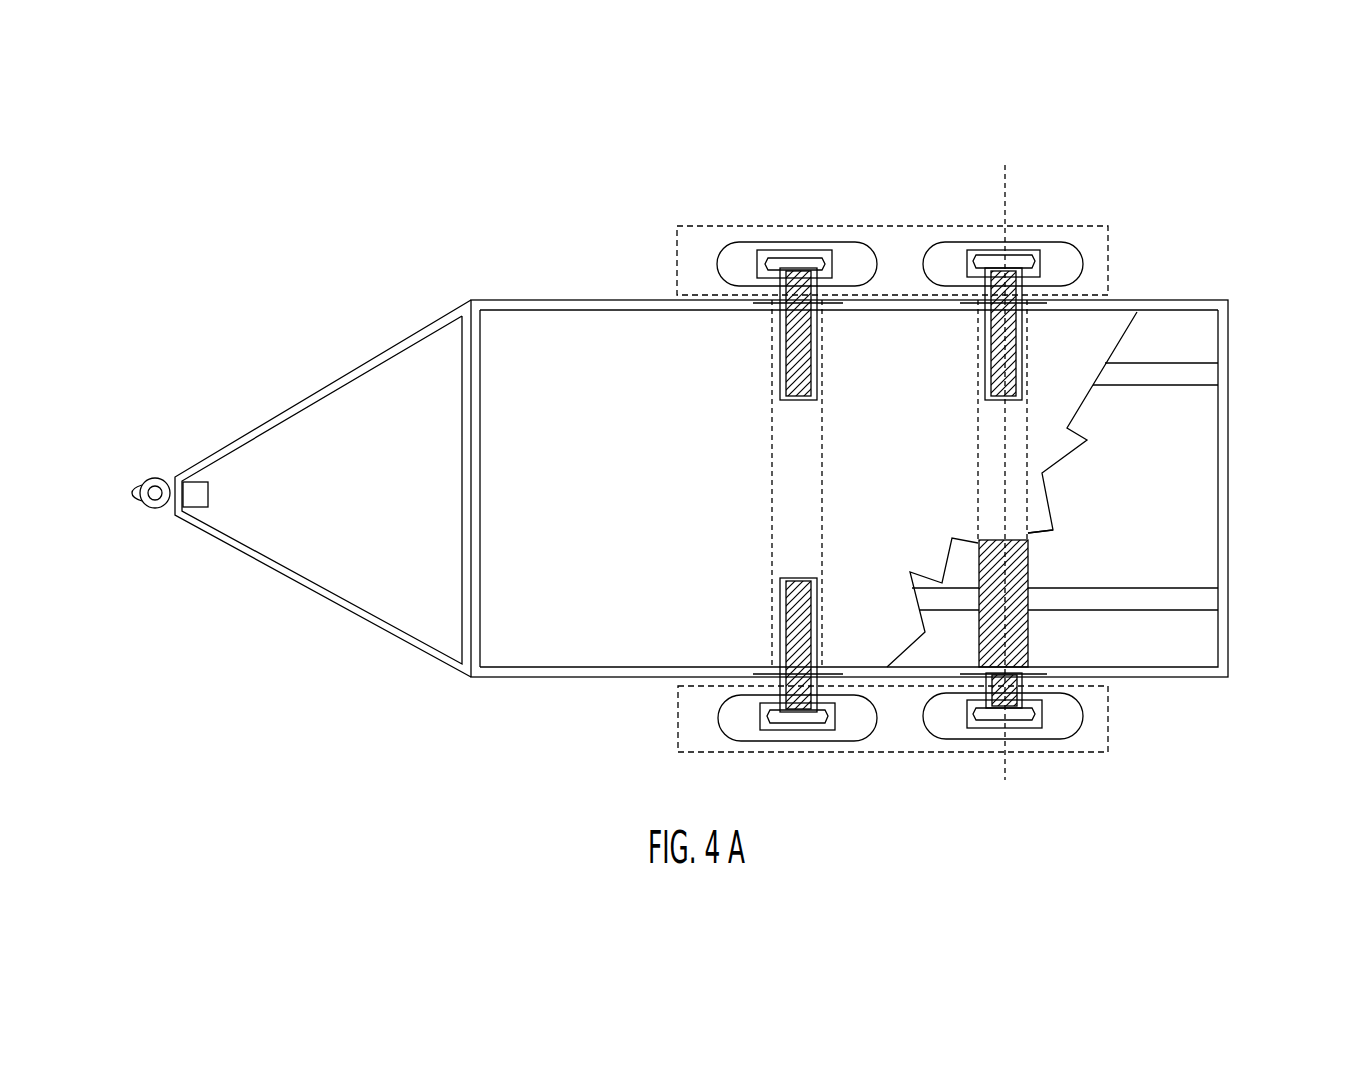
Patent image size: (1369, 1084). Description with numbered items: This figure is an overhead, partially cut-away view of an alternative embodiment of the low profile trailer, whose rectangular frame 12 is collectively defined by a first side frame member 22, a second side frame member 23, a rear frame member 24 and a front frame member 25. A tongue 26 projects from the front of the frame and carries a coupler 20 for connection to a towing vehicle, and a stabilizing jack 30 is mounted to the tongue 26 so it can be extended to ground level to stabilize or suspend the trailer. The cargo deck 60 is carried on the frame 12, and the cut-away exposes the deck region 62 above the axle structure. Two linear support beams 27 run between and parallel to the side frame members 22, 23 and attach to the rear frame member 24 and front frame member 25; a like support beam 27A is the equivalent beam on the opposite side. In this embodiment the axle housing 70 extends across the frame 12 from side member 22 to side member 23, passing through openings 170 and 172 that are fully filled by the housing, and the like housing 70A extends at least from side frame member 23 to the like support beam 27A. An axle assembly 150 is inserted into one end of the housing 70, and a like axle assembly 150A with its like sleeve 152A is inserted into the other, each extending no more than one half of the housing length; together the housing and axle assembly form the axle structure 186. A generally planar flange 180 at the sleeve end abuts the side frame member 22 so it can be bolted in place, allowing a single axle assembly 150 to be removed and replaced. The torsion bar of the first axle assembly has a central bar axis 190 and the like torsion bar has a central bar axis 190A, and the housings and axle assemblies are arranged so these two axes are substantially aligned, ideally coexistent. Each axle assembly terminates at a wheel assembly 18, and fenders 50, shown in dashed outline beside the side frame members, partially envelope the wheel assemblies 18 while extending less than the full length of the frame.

The frame 12 is at (532, 700).
The wheel assembly 18 is at (745, 245).
The coupler 20 is at (147, 513).
The first side frame member 22 is at (1183, 677).
The second side frame member 23 is at (1228, 297).
The rear frame member 24 is at (1222, 515).
The front frame member 25 is at (477, 367).
The tongue 26 is at (285, 577).
The support beam 27 is at (1210, 602).
The like support beam 27A is at (1210, 373).
The stabilizing jack 30 is at (203, 512).
The fender 50 is at (693, 263).
The cargo deck 60 is at (527, 452).
The deck surface 62 is at (603, 460).
The axle housing 70 is at (1003, 587).
The like housing 70A is at (1027, 343).
The axle assembly 150 is at (835, 335).
The like axle assembly 150A is at (1027, 318).
The like sleeve 152A is at (1027, 381).
The opening 170 is at (1028, 665).
The opening 172 is at (1028, 612).
The flange 180 is at (833, 683).
The axle structure 186 is at (975, 633).
The central bar axis 190 is at (1003, 762).
The central bar axis 190A is at (1008, 177).